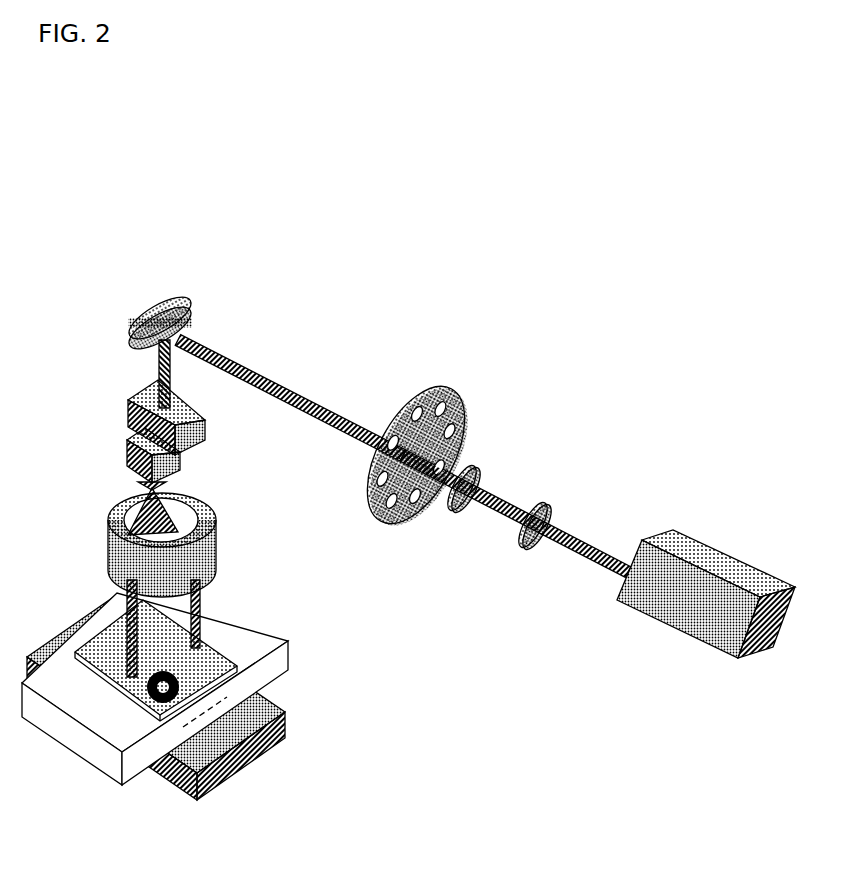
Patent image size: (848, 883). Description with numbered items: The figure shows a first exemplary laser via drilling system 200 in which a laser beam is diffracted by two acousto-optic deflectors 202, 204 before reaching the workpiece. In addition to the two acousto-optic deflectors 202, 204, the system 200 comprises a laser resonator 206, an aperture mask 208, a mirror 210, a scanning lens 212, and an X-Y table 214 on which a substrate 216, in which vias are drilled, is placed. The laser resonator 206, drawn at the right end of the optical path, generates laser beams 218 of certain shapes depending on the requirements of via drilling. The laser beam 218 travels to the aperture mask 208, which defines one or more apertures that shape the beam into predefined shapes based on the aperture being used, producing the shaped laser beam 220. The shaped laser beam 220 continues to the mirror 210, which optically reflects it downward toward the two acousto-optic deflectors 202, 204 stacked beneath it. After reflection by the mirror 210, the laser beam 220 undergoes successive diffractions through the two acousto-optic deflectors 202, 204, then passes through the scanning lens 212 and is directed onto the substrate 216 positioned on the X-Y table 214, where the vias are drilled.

The laser via drilling system 200 is at (401, 292).
The acousto-optic deflector 202 is at (129, 399).
The acousto-optic deflector 204 is at (123, 461).
The laser resonator 206 is at (735, 553).
The aperture mask 208 is at (462, 406).
The mirror 210 is at (196, 306).
The scanning lens 212 is at (218, 549).
The X-Y table 214 is at (289, 641).
The substrate 216 is at (220, 665).
The laser beam 218 is at (583, 540).
The shaped laser beam 220 is at (285, 380).